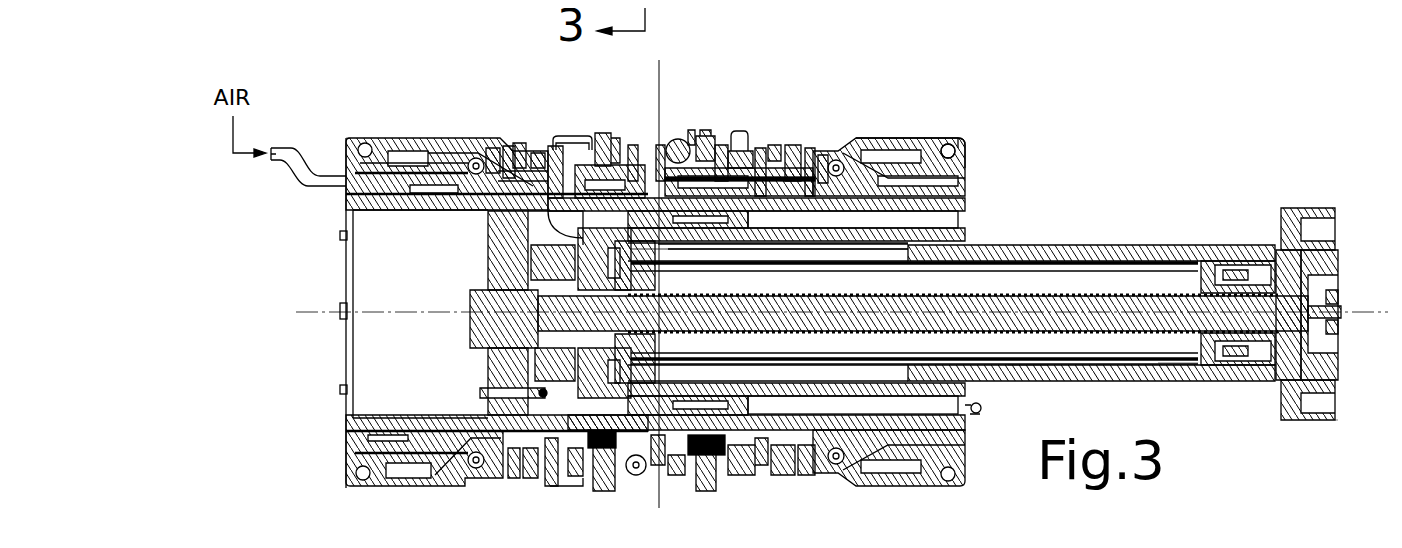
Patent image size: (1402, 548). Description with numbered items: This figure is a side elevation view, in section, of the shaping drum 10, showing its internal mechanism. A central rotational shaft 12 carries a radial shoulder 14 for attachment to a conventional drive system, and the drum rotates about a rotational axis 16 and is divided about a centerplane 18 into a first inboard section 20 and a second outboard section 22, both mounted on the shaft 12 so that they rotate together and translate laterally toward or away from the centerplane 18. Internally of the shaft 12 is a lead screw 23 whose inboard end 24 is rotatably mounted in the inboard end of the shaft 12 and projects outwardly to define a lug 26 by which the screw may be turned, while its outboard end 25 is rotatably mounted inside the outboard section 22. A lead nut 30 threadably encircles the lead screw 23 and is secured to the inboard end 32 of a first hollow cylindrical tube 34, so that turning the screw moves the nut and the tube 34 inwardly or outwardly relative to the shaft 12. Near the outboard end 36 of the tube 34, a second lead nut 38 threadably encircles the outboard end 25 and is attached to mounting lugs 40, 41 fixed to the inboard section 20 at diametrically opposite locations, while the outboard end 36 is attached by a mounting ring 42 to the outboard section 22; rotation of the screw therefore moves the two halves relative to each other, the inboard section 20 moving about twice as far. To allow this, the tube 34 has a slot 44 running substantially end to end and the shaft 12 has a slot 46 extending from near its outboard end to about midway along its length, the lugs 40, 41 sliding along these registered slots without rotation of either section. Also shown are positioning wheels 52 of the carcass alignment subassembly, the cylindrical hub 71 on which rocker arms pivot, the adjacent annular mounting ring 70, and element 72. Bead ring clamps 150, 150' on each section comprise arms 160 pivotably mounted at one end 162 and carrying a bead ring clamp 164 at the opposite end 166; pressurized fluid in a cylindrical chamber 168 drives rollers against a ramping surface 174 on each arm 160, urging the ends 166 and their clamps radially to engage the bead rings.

The drum 10 is at (687, 68).
The central shaft 12 is at (1090, 237).
The radial shoulder 14 is at (1313, 200).
The rotational axis 16 is at (320, 300).
The centerplane 18 is at (651, 97).
The first inboard section 20 is at (861, 112).
The second outboard section 22 is at (393, 121).
The lead screw 23 is at (1157, 345).
The inboard end of lead screw 24 is at (1333, 311).
The outboard end of lead screw 25 is at (462, 317).
The lug 26 is at (1328, 295).
The lead nut 30 is at (1234, 237).
The inboard end of tube 32 is at (1197, 237).
The first hollow cylindrical tube 34 is at (1065, 355).
The outboard end of tube 36 is at (525, 131).
The second lead nut 38 is at (481, 130).
The mounting lug 40 is at (627, 261).
The mounting lug 41 is at (626, 345).
The mounting ring 42 is at (483, 223).
The slot 44 is at (1010, 357).
The slot 46 is at (812, 249).
The positioning wheel 52 is at (699, 128).
The annular mounting ring 70 is at (670, 130).
The cylindrical hub 71 is at (760, 132).
The seal retainer 72 is at (738, 130).
The bead ring clamp 150 is at (802, 132).
The bead ring clamp 150' is at (491, 119).
The arm 160 is at (901, 130).
The pivot end of arm 162 is at (954, 130).
The bead ring clamp 164 is at (798, 140).
The opposite end of arm 166 is at (821, 138).
The cylindrical chamber 168 is at (944, 222).
The ramping surface 174 is at (940, 162).